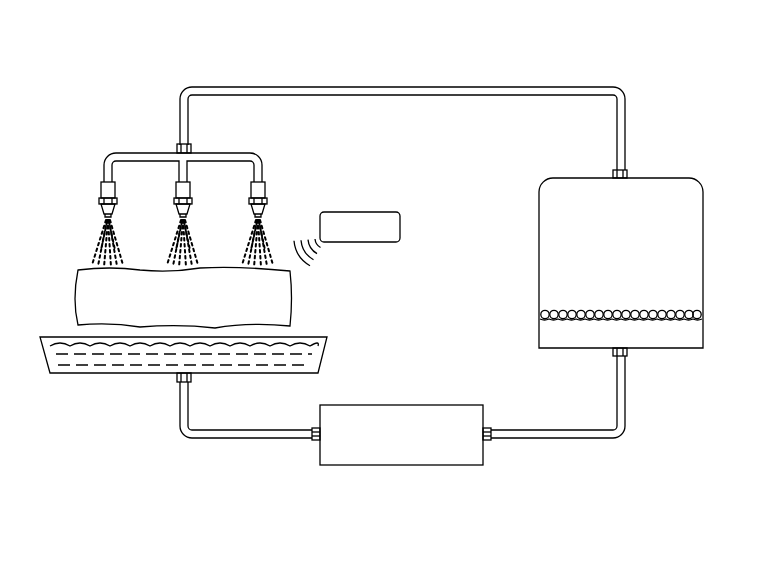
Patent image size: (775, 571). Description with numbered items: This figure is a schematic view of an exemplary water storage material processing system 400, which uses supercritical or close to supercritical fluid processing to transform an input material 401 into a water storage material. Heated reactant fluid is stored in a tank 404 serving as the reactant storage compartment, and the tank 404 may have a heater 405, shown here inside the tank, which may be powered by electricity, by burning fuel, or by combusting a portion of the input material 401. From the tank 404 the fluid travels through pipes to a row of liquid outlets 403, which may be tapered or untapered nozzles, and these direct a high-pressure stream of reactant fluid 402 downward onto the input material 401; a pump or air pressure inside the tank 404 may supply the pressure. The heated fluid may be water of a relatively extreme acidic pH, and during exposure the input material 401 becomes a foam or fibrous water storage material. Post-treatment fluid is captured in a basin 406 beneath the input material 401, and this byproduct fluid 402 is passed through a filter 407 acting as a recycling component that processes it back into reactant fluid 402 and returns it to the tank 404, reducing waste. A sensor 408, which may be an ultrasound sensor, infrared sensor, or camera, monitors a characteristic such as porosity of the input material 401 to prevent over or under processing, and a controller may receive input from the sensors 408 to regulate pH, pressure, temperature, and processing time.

The water storage material processing system 400 is at (130, 35).
The input material 401 is at (88, 295).
The stream of reactant fluid 402 is at (100, 235).
The liquid outlets 403 is at (100, 212).
The tank 404 is at (645, 178).
The heater 405 is at (676, 308).
The basin 406 is at (76, 375).
The filter 407 is at (425, 405).
The sensors 408 is at (360, 212).